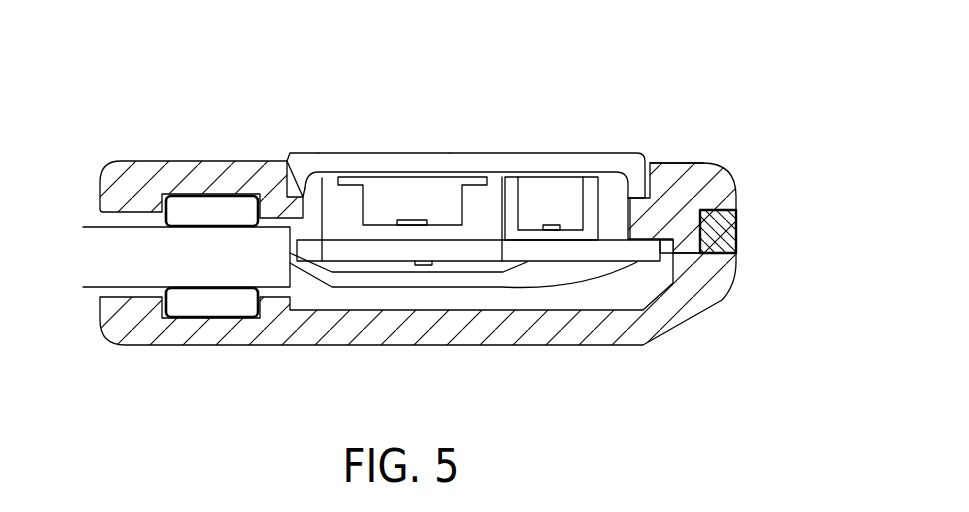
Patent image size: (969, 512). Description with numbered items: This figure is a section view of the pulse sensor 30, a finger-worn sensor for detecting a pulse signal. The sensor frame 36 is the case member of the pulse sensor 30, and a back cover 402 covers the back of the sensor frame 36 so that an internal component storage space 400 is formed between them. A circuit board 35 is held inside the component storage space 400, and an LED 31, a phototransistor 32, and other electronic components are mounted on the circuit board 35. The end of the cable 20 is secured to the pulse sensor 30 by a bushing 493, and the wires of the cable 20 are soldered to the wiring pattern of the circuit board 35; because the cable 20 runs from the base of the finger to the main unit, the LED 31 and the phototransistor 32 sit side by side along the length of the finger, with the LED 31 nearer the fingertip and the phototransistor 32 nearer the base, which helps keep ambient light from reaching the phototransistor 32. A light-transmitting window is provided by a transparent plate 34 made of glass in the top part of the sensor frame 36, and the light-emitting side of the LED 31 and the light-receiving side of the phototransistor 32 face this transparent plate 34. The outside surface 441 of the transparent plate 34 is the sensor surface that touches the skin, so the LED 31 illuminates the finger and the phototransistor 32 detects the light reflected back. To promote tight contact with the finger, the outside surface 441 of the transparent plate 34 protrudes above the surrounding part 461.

The cable 20 is at (98, 238).
The pulse sensor 30 is at (445, 112).
The LED 31 is at (553, 231).
The phototransistor 32 is at (405, 226).
The transparent plate 34 is at (452, 170).
The circuit board 35 is at (483, 252).
The sensor frame 36 is at (689, 181).
The component storage space 400 is at (288, 152).
The back cover 402 is at (681, 320).
The outside surface 441 is at (386, 152).
The surrounding part 461 is at (670, 162).
The bushing 493 is at (180, 196).